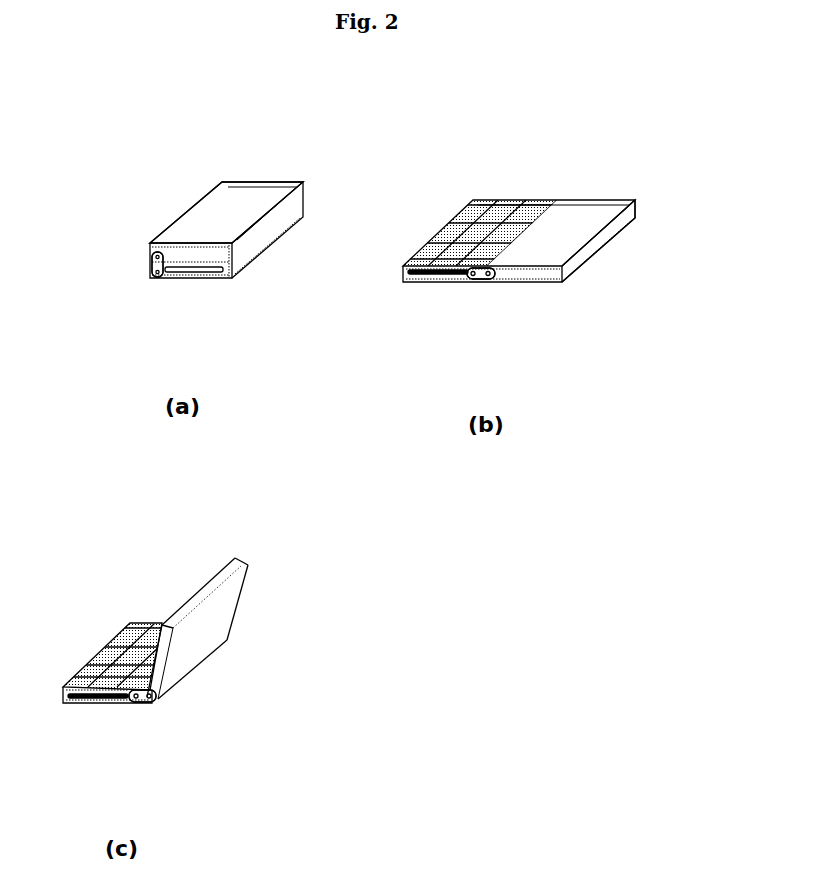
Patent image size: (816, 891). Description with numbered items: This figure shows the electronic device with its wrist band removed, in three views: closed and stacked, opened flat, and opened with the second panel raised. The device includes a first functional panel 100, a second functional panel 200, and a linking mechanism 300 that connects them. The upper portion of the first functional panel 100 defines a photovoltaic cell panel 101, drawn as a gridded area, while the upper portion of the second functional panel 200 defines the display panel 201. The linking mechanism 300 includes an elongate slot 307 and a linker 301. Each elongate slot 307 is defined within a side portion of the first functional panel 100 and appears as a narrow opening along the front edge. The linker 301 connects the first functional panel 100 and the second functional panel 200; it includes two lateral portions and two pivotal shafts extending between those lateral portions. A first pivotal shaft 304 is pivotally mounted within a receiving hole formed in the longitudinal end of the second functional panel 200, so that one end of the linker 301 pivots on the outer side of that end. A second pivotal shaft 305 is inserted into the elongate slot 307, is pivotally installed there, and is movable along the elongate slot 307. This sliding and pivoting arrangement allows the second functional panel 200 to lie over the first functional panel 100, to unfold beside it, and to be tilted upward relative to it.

The first functional panel 100 is at (241, 275).
The photovoltaic cell panel 101 is at (477, 210).
The second functional panel 200 is at (306, 180).
The display panel 201 is at (243, 188).
The linking mechanism 300 is at (147, 266).
The linker 301 is at (496, 274).
The first pivotal shaft 304 is at (150, 256).
The second pivotal shaft 305 is at (151, 282).
The elongate slot 307 is at (186, 268).